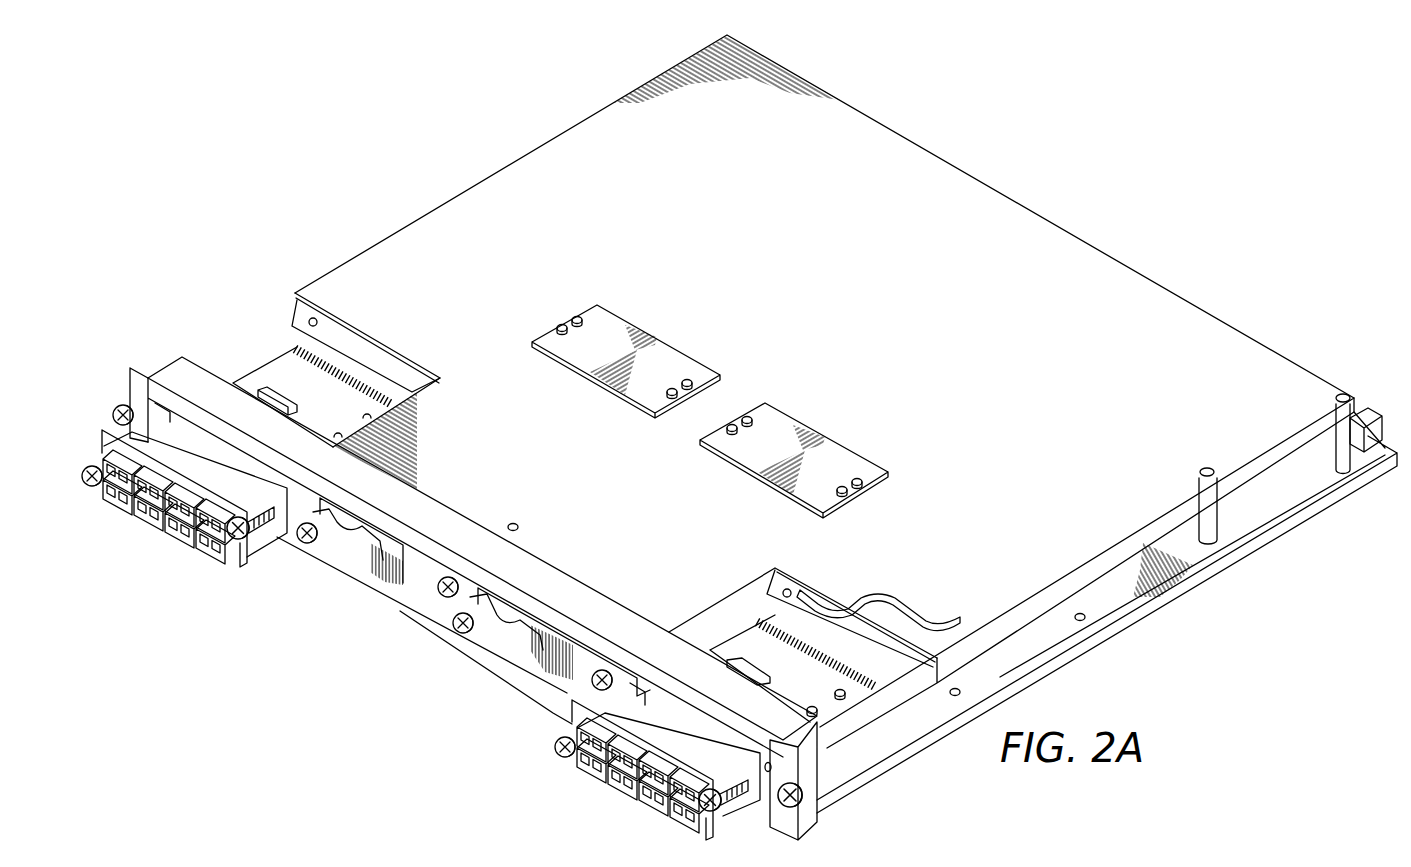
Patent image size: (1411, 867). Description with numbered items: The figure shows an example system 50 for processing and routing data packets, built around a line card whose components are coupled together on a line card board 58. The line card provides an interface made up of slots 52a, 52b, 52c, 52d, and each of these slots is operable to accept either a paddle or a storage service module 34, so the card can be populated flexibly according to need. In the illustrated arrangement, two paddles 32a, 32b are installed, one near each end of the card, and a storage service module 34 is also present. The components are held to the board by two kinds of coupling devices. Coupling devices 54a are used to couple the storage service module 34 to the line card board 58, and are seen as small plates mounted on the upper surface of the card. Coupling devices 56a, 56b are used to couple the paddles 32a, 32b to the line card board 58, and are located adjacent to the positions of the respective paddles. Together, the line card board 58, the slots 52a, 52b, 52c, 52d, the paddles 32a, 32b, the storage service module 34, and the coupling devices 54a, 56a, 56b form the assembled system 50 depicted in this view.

The system 50 is at (486, 103).
The line card board 58 is at (1148, 602).
The storage service module 34 is at (478, 472).
The slot 52a is at (167, 415).
The slot 52b is at (350, 523).
The slot 52c is at (507, 613).
The slot 52d is at (634, 693).
The paddle 32a is at (146, 519).
The paddle 32b is at (616, 794).
The coupling device 54a is at (673, 356).
The coupling device 56a is at (365, 353).
The coupling device 56b is at (970, 652).